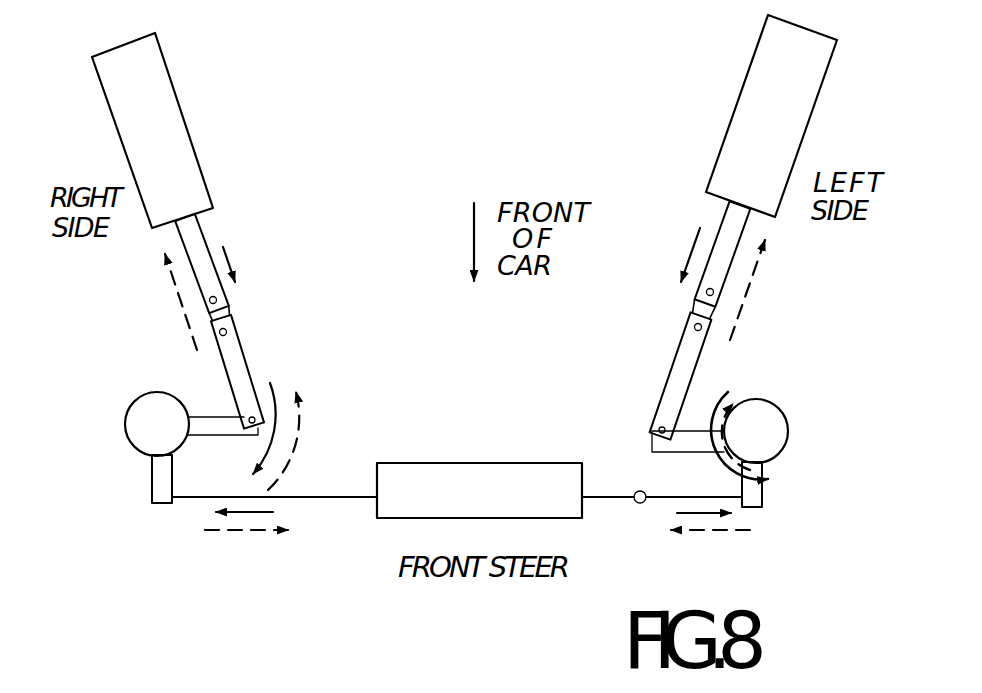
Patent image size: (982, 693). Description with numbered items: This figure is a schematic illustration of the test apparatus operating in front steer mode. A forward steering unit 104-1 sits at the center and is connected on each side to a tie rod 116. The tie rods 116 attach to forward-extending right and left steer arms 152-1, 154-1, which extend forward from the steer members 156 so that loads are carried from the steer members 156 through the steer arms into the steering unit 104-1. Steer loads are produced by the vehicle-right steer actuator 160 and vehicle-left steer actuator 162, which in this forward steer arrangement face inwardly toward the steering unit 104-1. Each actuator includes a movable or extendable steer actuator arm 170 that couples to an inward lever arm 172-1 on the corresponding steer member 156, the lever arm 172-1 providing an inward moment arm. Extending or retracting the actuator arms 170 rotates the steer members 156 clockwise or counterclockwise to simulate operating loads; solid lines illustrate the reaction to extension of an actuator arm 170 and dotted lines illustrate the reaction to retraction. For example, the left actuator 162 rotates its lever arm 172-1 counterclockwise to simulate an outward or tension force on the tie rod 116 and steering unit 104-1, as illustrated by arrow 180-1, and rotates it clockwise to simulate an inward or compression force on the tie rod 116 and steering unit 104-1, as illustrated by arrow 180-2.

The steer actuator 160 is at (213, 160).
The steer actuator 162 is at (813, 139).
The steer actuator arm 170 is at (200, 240).
The inward lever arm 172-1 is at (203, 420).
The steer member 156 is at (143, 422).
The right steer arm 152-1 is at (150, 485).
The left steer arm 154-1 is at (762, 492).
The tie rod 116 is at (340, 497).
The forward steering unit 104-1 is at (488, 463).
The arrow 180-1 is at (717, 517).
The arrow 180-2 is at (743, 530).